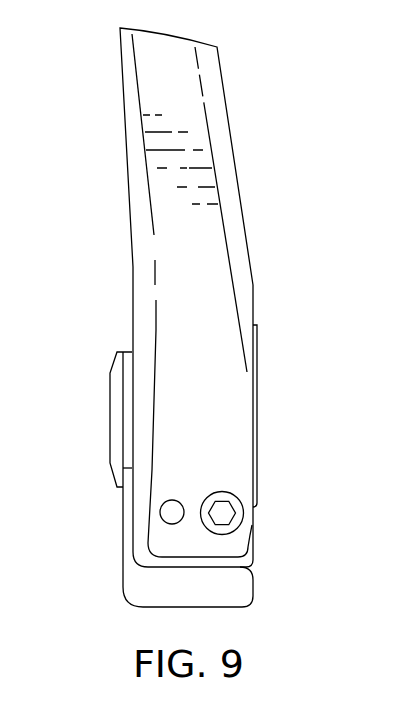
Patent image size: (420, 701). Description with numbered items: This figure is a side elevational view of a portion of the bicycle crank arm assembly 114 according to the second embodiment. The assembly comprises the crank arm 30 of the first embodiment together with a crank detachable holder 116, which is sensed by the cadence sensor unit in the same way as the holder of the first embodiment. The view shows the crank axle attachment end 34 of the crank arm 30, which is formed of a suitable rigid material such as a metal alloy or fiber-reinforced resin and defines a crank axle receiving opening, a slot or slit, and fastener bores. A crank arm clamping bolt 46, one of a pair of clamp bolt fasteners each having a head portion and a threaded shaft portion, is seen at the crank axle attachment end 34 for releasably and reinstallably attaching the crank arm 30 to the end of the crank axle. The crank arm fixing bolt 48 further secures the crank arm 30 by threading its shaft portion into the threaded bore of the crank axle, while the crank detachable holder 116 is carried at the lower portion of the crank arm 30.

The crank arm 30 is at (118, 93).
The bicycle crank arm assembly 114 is at (276, 132).
The crank axle attachment end 34 is at (213, 428).
The crank arm clamping bolts 46 is at (255, 520).
The crank arm fixing bolt 48 is at (115, 365).
The crank detachable holder 116 is at (104, 601).